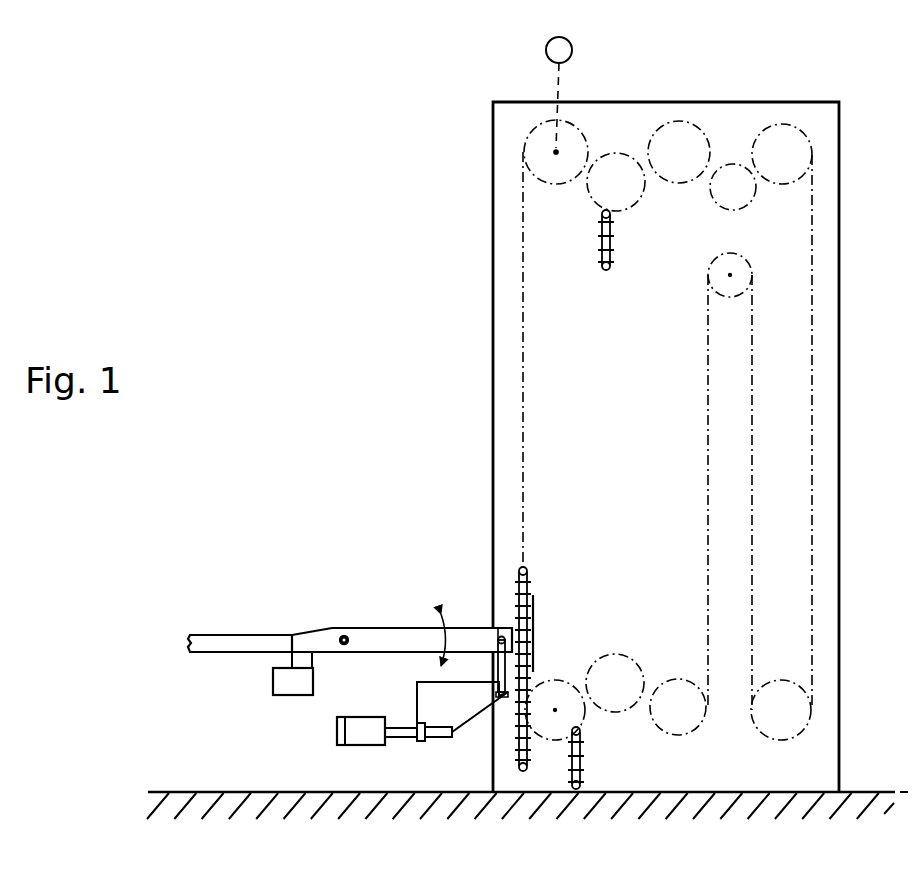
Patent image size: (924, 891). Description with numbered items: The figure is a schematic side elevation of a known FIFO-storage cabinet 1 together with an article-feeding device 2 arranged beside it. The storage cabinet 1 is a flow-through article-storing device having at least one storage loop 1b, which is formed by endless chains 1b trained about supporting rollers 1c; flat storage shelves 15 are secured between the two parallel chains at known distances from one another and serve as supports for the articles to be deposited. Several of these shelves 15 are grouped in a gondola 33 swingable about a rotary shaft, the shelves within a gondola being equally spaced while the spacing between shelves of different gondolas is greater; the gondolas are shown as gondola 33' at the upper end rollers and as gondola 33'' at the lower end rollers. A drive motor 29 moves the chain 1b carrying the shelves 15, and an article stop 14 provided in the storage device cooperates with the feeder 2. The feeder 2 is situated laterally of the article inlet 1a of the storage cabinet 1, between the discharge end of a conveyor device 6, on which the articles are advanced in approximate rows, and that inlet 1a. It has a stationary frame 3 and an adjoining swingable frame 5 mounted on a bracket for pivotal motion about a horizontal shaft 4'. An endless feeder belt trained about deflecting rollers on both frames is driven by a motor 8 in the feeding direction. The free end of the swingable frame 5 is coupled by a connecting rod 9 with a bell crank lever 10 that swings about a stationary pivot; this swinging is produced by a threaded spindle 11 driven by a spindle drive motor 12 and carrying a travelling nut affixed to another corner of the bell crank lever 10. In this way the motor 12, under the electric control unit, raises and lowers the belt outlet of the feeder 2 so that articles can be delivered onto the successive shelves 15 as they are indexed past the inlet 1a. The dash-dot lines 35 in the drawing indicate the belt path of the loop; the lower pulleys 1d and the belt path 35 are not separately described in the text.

The FIFO-storage cabinet 1 is at (470, 148).
The article inlet 1a is at (506, 622).
The storage loop 1b is at (707, 398).
The supporting rollers 1c is at (737, 178).
The lower guide pulleys 1d is at (562, 698).
The article-feeding device 2 is at (323, 580).
The stationary frame 3 is at (315, 637).
The horizontal shaft 4' is at (355, 617).
The swingable frame 5 is at (420, 636).
The conveyor device 6 is at (235, 640).
The motor 8 is at (292, 688).
The connecting rod 9 is at (496, 662).
The bell crank lever 10 is at (458, 703).
The threaded spindle 11 is at (400, 737).
The spindle drive motor 12 is at (362, 735).
The article stop 14 is at (505, 619).
The storage shelves 15 is at (517, 612).
The drive motor 29 is at (545, 45).
The gondola 33 is at (493, 656).
The gondola at upper end rollers 33' is at (523, 241).
The gondola at lower end rollers 33'' is at (605, 795).
The endless belt 35 is at (520, 337).